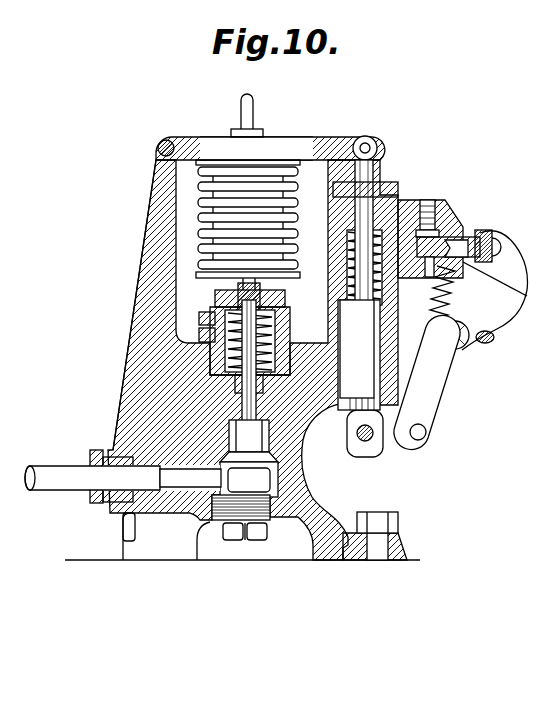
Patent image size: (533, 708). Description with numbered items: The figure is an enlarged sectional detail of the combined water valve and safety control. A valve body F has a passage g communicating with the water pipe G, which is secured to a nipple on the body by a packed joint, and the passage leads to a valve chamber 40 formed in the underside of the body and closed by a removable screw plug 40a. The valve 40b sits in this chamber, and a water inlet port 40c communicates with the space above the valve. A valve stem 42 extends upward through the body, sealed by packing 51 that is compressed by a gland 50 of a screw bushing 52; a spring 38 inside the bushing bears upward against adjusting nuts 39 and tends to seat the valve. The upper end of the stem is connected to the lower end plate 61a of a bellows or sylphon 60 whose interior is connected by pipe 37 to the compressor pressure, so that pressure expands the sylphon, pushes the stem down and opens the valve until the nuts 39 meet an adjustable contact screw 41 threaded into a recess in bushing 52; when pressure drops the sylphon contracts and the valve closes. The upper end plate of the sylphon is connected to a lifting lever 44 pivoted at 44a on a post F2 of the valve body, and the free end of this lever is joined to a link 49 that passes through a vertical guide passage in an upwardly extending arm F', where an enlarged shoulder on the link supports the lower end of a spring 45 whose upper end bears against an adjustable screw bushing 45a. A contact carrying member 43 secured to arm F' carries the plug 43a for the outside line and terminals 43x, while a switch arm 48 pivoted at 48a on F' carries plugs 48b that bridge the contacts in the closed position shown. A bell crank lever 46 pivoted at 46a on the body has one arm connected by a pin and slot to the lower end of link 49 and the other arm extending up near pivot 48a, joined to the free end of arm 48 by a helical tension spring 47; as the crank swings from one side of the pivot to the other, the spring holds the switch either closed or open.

The pipe 37 is at (255, 110).
The spring 38 is at (287, 316).
The adjusting nuts 39 is at (287, 298).
The valve chamber 40 is at (240, 500).
The screw plug 40a is at (257, 542).
The valve 40b is at (278, 462).
The water inlet port 40c is at (262, 438).
The adjustable contact screw 41 is at (207, 318).
The valve stem 42 is at (258, 410).
The contact carrying member 43 is at (447, 206).
The plug 43a is at (430, 200).
The terminals 43x is at (460, 238).
The lifting arm or lever 44 is at (307, 143).
The pivot 44a is at (168, 144).
The spring 45 is at (383, 276).
The adjustable screw bushing 45a is at (376, 195).
The bell crank lever 46 is at (398, 440).
The pivot 46a is at (428, 434).
The helical tension spring 47 is at (457, 280).
The switch arm 48 is at (495, 290).
The pivot 48a is at (460, 347).
The plugs or members 48b is at (487, 232).
The link 49 is at (380, 156).
The gland 50 is at (250, 378).
The packing 51 is at (245, 392).
The screw bushing 52 is at (207, 334).
The bellows or sylphon 60 is at (200, 217).
The lower end plate 61a is at (236, 284).
The valve body F is at (242, 360).
The post or extension F2 is at (152, 192).
The upwardly extending arm F' is at (430, 225).
The pipe G is at (68, 467).
The passage g is at (185, 480).